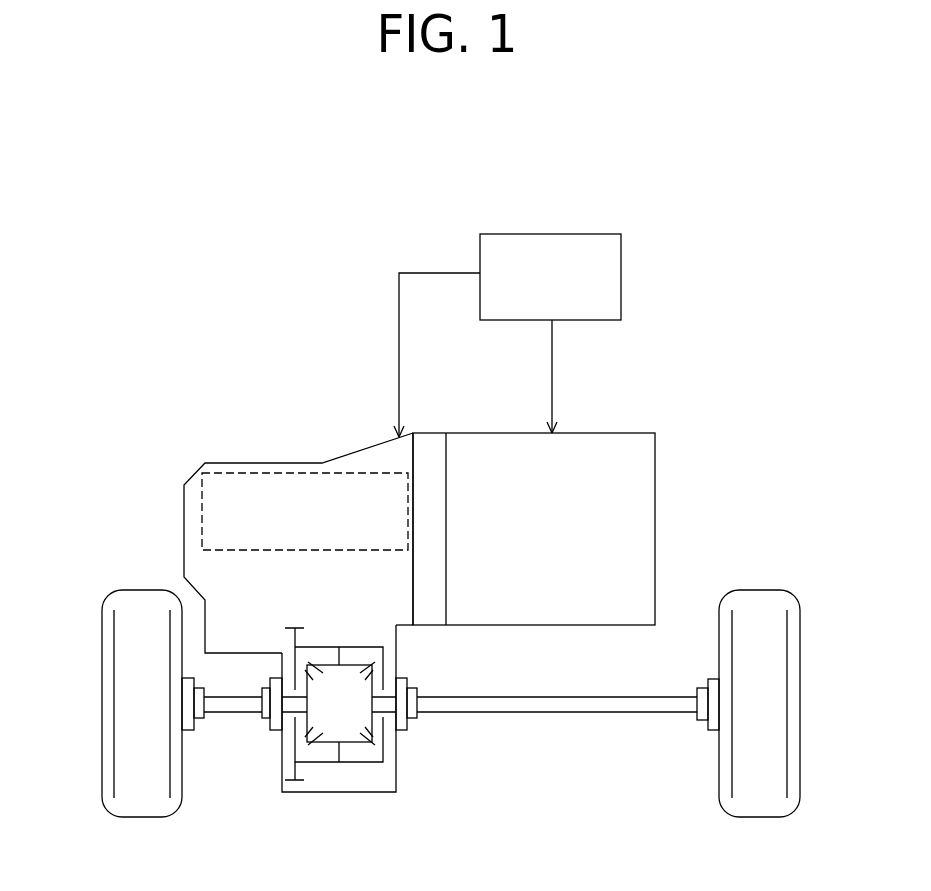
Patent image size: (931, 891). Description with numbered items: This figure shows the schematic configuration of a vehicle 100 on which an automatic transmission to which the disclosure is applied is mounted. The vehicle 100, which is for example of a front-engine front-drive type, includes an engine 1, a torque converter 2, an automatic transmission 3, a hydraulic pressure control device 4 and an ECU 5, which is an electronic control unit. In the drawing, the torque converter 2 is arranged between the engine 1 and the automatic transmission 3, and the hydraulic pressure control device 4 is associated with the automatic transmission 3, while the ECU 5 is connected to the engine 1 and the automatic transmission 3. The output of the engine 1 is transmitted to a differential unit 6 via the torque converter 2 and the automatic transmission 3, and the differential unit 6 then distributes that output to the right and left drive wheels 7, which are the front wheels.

The vehicle 100 is at (703, 362).
The engine 1 is at (655, 472).
The torque converter 2 is at (430, 442).
The automatic transmission 3 is at (202, 557).
The hydraulic pressure control device 4 is at (202, 505).
The ECU 5 is at (582, 233).
The differential unit 6 is at (333, 774).
The drive wheels 7 is at (102, 647).